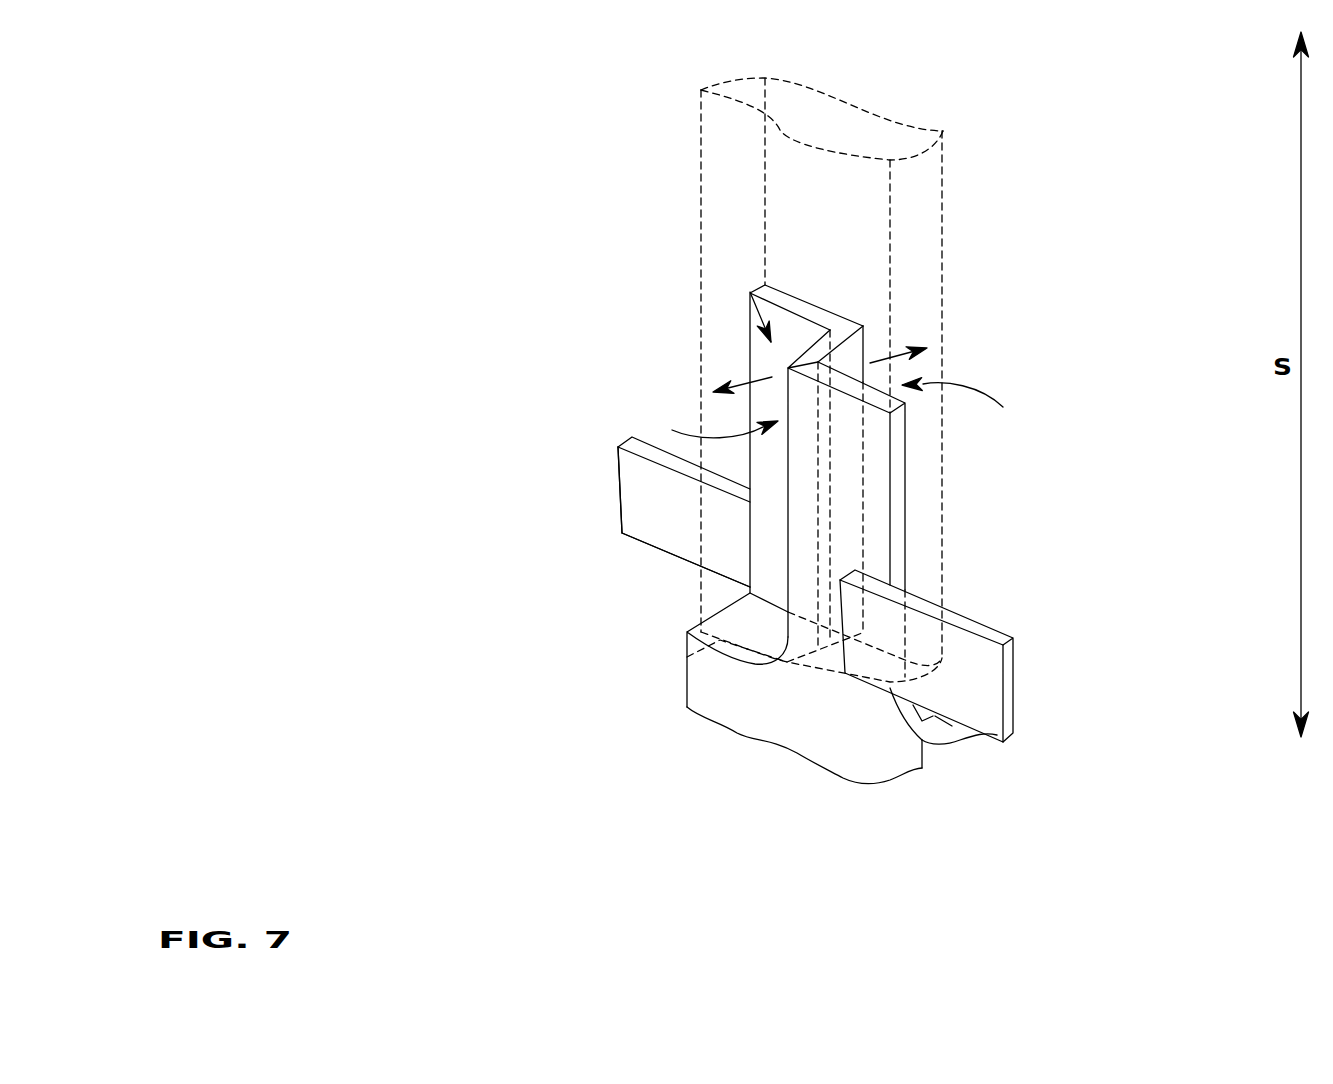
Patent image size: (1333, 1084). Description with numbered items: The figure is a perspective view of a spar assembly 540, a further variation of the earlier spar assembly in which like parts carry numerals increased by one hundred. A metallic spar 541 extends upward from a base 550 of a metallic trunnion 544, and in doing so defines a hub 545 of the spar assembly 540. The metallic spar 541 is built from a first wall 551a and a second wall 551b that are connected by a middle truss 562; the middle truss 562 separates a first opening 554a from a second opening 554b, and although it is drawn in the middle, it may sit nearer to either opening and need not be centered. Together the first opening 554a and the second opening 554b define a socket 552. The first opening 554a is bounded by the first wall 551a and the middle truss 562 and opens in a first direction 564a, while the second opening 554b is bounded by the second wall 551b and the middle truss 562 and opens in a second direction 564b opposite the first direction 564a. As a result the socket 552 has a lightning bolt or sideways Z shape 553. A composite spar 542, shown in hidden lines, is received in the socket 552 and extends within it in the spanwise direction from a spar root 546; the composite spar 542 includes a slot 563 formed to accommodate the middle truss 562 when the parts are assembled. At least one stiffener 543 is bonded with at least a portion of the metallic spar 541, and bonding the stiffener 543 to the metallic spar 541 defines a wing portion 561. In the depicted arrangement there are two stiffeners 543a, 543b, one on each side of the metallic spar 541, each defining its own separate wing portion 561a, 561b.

The spar assembly 540 is at (431, 93).
The metallic spar 541 is at (835, 491).
The composite spar 542 is at (930, 243).
The stiffener 543 is at (678, 510).
The stiffener 543a is at (684, 517).
The stiffener 543b is at (974, 630).
The metallic trunnion 544 is at (743, 683).
The hub 545 is at (933, 718).
The spar root 546 is at (687, 657).
The base 550 is at (783, 707).
The first wall 551a is at (787, 293).
The second wall 551b is at (838, 380).
The socket 552 is at (750, 292).
The sideways Z shape 553 is at (804, 310).
The first opening 554a is at (705, 420).
The second opening 554b is at (976, 410).
The wing portion 561 is at (643, 468).
The wing portion 561a is at (620, 490).
The wing portion 561b is at (980, 693).
The middle truss 562 is at (835, 342).
The slot 563 is at (863, 537).
The first direction 564a is at (745, 378).
The second direction 564b is at (870, 363).